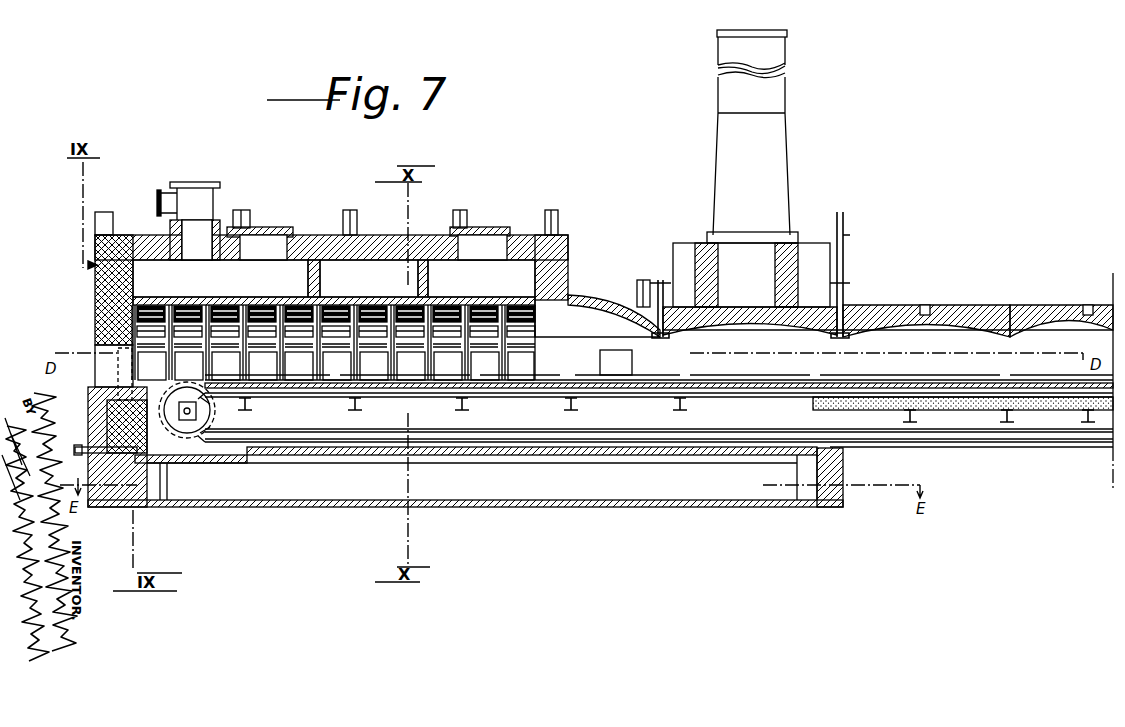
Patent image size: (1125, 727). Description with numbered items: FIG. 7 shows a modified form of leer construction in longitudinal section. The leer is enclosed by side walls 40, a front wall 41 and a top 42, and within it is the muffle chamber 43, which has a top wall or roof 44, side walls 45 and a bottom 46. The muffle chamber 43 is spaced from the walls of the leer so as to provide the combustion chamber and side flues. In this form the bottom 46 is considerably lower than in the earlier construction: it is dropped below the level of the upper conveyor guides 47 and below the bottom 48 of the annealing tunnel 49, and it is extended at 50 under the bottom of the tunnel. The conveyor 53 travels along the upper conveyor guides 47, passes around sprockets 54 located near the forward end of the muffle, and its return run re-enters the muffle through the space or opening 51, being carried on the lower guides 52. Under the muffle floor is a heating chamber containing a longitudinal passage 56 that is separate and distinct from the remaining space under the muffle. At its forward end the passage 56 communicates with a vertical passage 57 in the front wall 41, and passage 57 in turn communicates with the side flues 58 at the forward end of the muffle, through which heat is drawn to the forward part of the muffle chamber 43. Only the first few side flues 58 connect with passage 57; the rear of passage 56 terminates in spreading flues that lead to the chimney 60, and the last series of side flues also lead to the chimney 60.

The side walls 40 is at (220, 278).
The front wall 41 is at (100, 310).
The top 42 is at (327, 237).
The muffle chamber 43 is at (299, 366).
The top wall or roof 44 is at (367, 303).
The side walls 45 is at (460, 353).
The bottom 46 is at (486, 448).
The upper conveyor guides 47 is at (540, 391).
The bottom 48 is at (882, 405).
The annealing tunnel 49 is at (841, 288).
The extension 50 is at (843, 455).
The space or opening 51 is at (813, 428).
The lower guides 52 is at (702, 437).
The conveyor 53 is at (189, 366).
The sprockets 54 is at (185, 417).
The longitudinal passage 56 is at (465, 447).
The vertical passage 57 is at (117, 388).
The side flues 58 is at (152, 366).
The chimney 60 is at (752, 136).